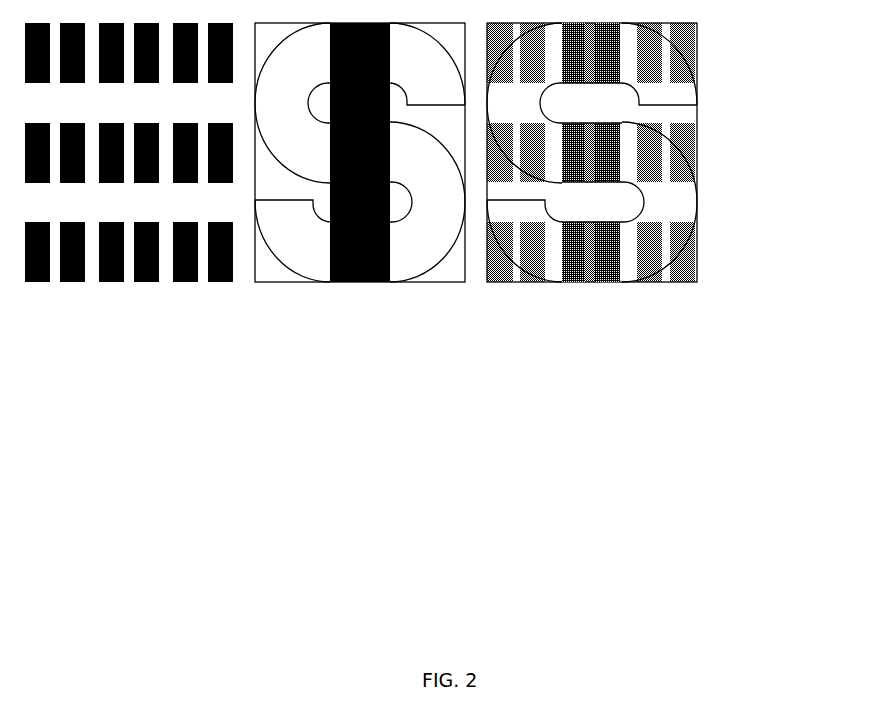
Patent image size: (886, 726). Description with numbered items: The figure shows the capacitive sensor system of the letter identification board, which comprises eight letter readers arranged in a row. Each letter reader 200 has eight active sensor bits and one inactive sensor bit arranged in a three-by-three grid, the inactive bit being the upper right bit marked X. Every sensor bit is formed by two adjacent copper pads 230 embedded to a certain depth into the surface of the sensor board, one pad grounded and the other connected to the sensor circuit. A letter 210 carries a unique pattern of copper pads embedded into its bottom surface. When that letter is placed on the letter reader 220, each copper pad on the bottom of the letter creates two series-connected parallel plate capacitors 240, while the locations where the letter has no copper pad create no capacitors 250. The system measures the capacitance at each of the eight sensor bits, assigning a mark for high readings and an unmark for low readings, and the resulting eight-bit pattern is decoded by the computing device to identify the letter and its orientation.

The letter reader 200 is at (117, 308).
The letter 210 is at (370, 317).
The letter reader 220 is at (577, 308).
The copper pads 230 is at (222, 282).
The series-connected parallel plate capacitors 240 is at (657, 195).
The locations with no capacitors 250 is at (660, 175).